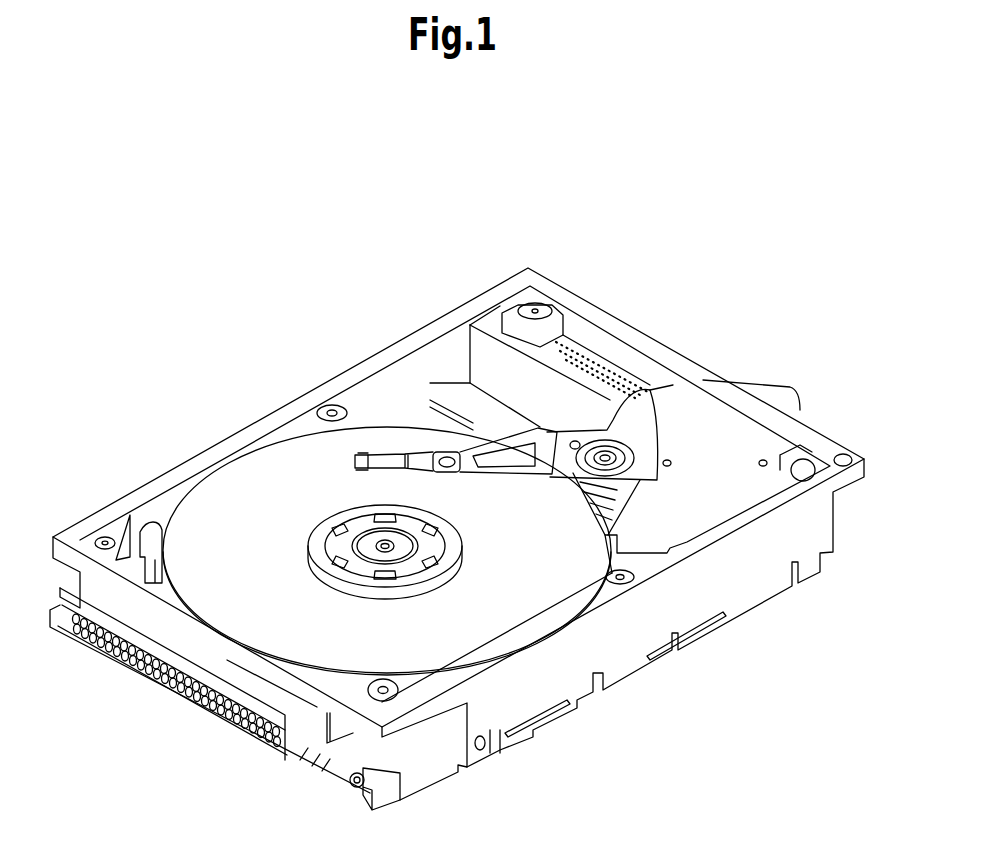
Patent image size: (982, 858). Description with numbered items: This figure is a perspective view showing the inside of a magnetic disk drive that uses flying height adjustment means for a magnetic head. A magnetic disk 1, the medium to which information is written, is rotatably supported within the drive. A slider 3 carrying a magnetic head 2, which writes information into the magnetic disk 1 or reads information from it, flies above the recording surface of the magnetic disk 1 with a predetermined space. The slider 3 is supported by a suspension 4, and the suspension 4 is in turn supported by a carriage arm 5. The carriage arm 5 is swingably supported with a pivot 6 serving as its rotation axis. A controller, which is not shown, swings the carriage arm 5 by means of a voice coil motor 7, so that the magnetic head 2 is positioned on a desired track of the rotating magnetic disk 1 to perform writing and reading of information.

The magnetic disk 1 is at (203, 540).
The magnetic head 2 is at (356, 457).
The slider 3 is at (358, 453).
The suspension 4 is at (397, 455).
The carriage arm 5 is at (478, 450).
The pivot 6 is at (605, 457).
The voice coil motor 7 is at (703, 380).